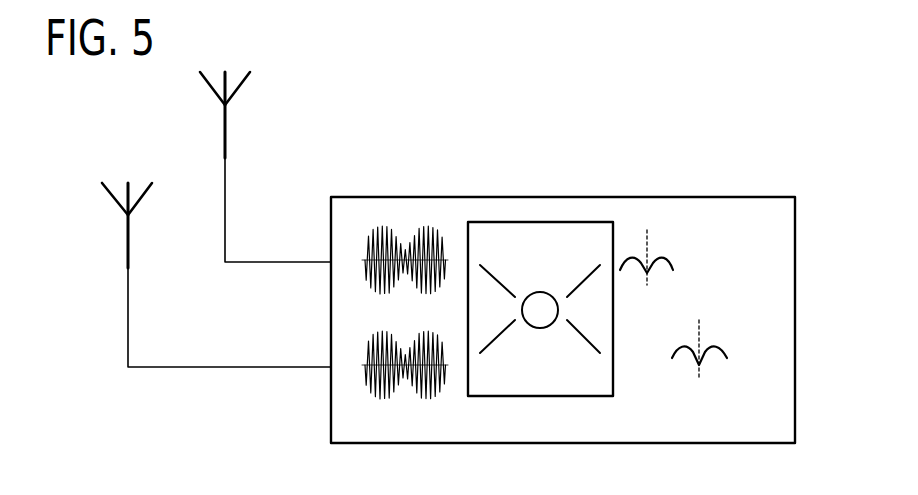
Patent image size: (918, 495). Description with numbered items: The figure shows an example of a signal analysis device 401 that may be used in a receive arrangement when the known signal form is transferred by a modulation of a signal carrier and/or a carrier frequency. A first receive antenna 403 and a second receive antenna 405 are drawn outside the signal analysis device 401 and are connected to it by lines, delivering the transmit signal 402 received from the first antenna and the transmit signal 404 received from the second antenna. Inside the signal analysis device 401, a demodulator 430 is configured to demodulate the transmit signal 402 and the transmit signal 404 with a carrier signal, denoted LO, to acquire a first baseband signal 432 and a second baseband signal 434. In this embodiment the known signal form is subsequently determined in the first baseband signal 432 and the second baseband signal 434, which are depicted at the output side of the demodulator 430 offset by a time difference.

The signal analysis device 401 is at (695, 197).
The transmit signal received from the first antenna 402 is at (400, 240).
The first receive antenna 403 is at (228, 135).
The transmit signal received from the second antenna 404 is at (405, 375).
The second receive antenna 405 is at (125, 254).
The demodulator 430 is at (530, 222).
The first baseband signal 432 is at (668, 262).
The second baseband signal 434 is at (688, 348).